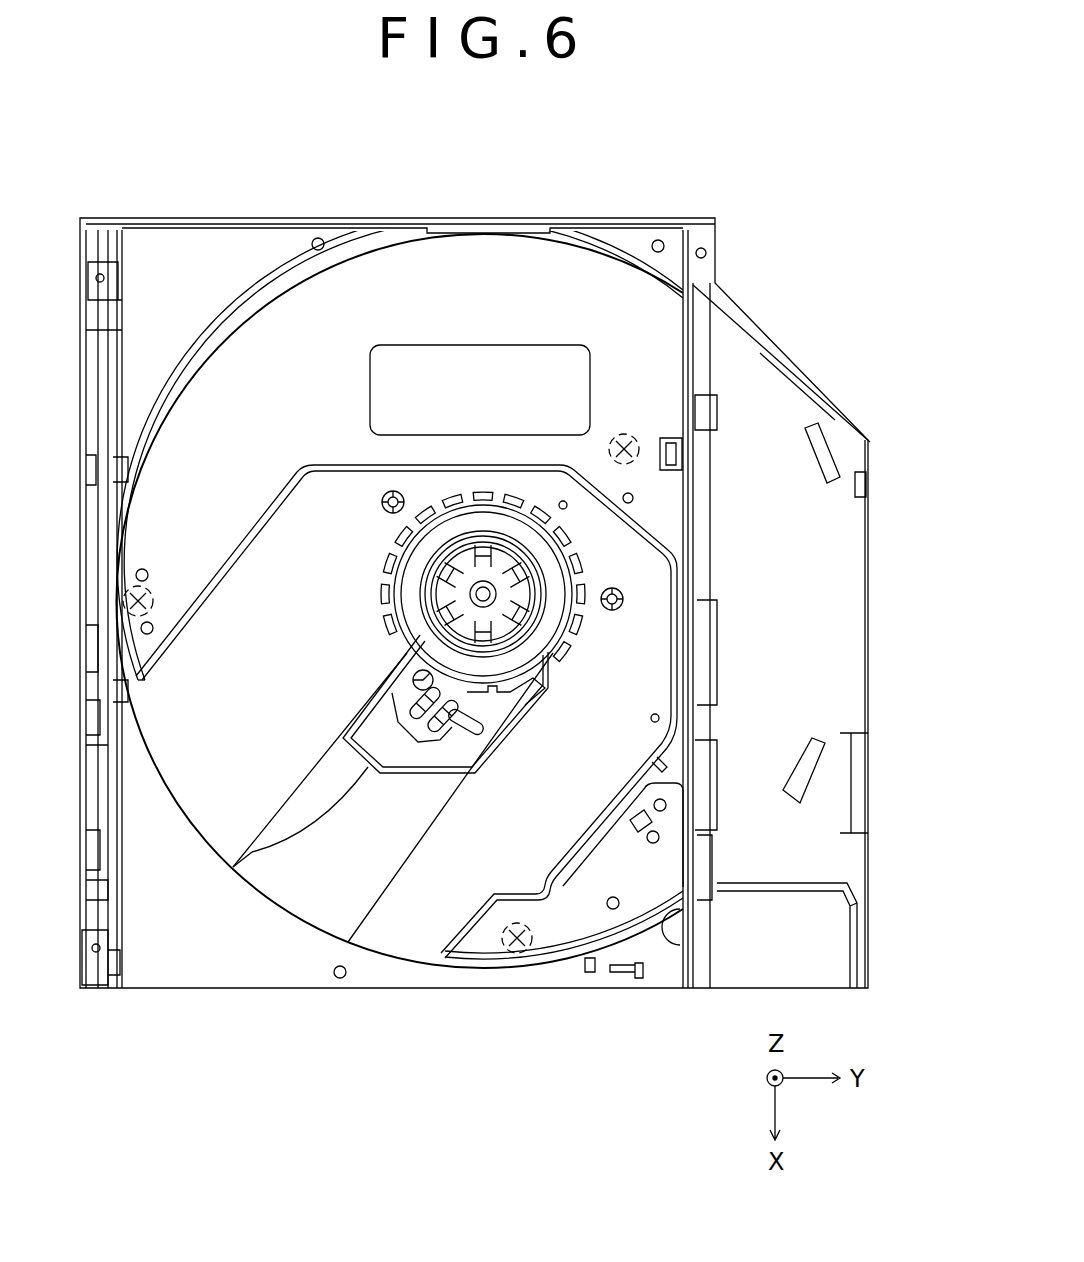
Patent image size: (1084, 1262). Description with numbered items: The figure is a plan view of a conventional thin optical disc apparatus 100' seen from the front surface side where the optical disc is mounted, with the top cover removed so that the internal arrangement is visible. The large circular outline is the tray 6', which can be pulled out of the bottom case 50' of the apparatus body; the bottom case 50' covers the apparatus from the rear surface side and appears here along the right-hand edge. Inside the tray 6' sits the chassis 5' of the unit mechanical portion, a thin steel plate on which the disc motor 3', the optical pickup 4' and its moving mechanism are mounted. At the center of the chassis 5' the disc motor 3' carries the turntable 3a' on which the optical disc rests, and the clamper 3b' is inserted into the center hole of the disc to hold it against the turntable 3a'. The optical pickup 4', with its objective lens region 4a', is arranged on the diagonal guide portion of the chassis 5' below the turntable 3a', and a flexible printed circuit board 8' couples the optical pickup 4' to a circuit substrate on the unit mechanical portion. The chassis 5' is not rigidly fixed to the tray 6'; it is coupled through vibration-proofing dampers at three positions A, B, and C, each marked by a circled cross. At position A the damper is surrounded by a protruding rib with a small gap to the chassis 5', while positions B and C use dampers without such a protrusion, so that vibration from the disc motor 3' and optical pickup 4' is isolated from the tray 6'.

The optical disc apparatus 100' is at (475, 574).
The tray 6' is at (399, 569).
The bottom case 50' is at (781, 544).
The chassis 5' is at (400, 585).
The disc motor 3' is at (452, 594).
The turntable 3a' is at (428, 594).
The clamper 3b' is at (455, 577).
The optical pickup 4' is at (445, 731).
The objective lens 4a' is at (378, 669).
The flexible printed circuit board 8' is at (393, 797).
The coupling position A is at (630, 430).
The coupling position B is at (153, 603).
The coupling position C is at (517, 920).